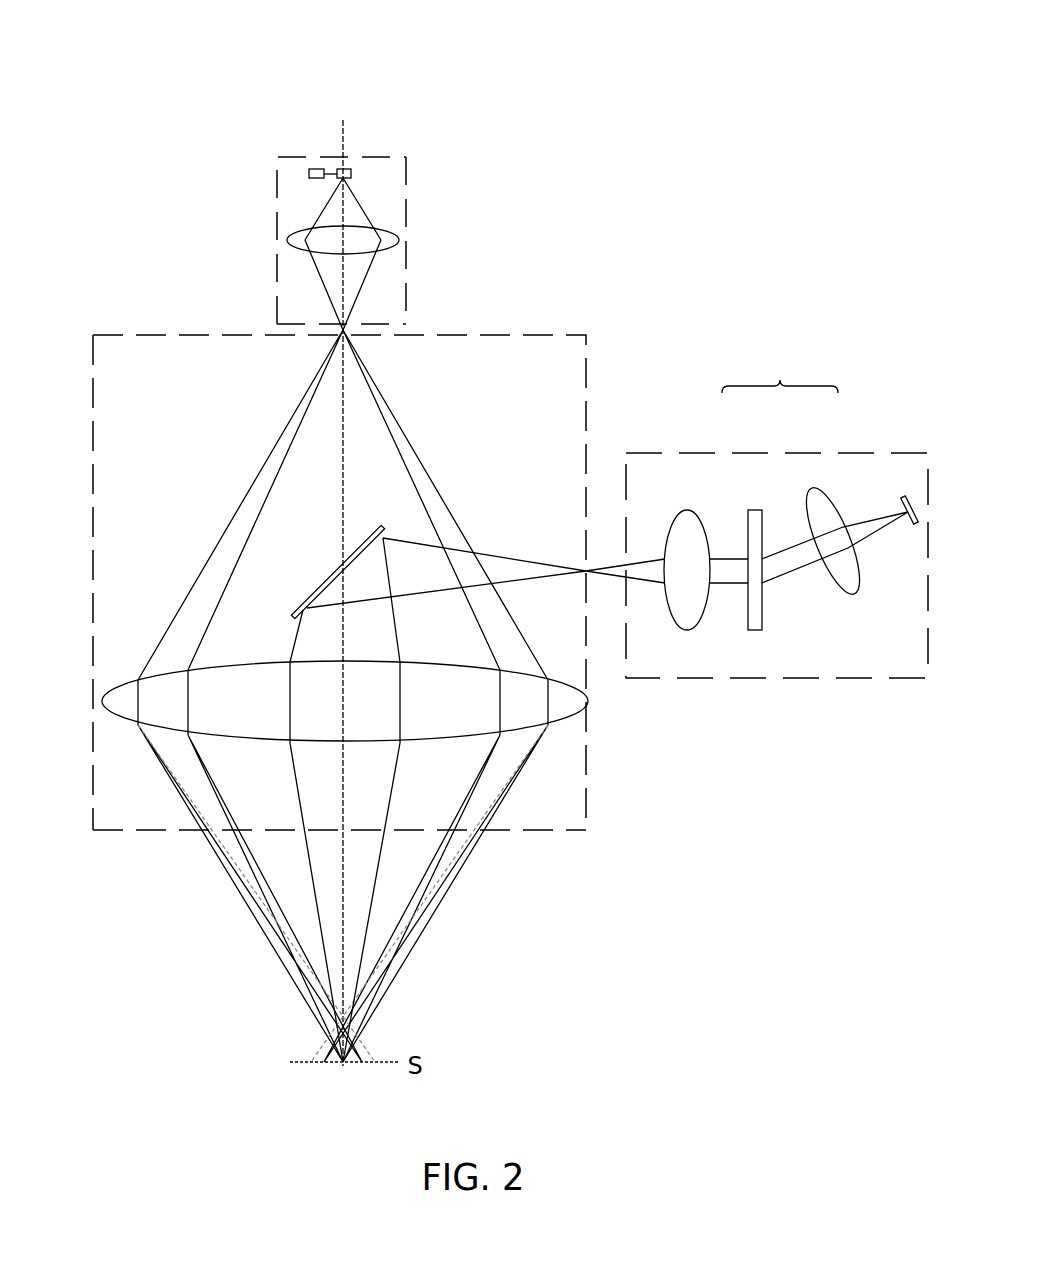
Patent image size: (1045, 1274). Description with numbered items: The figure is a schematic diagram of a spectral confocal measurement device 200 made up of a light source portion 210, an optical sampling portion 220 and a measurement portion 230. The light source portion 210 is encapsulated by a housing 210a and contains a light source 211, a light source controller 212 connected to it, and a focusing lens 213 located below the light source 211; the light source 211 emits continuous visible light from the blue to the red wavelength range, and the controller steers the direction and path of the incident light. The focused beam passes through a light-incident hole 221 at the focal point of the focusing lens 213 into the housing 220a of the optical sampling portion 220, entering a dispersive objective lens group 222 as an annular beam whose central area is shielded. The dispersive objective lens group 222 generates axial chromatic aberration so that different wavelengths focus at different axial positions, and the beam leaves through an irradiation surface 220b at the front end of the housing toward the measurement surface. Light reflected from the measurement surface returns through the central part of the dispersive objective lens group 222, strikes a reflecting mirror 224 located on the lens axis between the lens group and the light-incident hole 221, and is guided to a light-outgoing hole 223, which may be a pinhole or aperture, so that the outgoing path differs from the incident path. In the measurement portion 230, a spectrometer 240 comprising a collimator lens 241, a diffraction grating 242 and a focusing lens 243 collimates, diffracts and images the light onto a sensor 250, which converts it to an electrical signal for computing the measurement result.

The spectral confocal measurement device 200 is at (140, 47).
The light source portion 210 is at (358, 220).
The housing 210a is at (406, 210).
The light source 211 is at (347, 178).
The light source controller 212 is at (315, 172).
The focusing lens 213 is at (300, 242).
The optical sampling portion 220 is at (342, 694).
The housing 220a is at (92, 443).
The irradiation surface 220b is at (155, 833).
The light-incident hole 221 is at (347, 330).
The dispersive objective lens group 222 is at (127, 700).
The light-outgoing hole 223 is at (587, 573).
The reflecting mirror 224 is at (315, 592).
The measurement portion 230 is at (782, 672).
The spectrometer 240 is at (767, 489).
The collimator lens 241 is at (682, 533).
The diffraction grating 242 is at (755, 522).
The focusing lens 243 is at (825, 520).
The sensor 250 is at (905, 505).